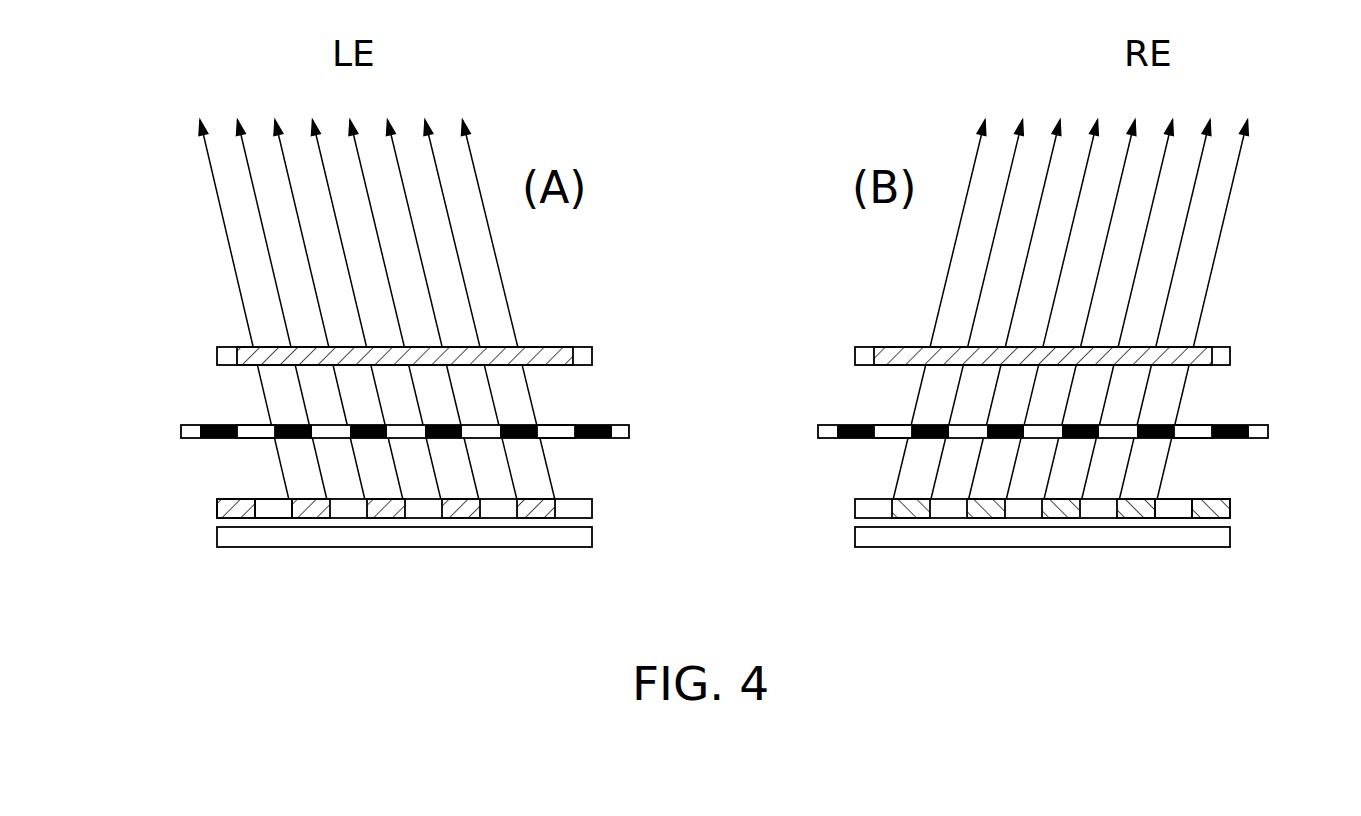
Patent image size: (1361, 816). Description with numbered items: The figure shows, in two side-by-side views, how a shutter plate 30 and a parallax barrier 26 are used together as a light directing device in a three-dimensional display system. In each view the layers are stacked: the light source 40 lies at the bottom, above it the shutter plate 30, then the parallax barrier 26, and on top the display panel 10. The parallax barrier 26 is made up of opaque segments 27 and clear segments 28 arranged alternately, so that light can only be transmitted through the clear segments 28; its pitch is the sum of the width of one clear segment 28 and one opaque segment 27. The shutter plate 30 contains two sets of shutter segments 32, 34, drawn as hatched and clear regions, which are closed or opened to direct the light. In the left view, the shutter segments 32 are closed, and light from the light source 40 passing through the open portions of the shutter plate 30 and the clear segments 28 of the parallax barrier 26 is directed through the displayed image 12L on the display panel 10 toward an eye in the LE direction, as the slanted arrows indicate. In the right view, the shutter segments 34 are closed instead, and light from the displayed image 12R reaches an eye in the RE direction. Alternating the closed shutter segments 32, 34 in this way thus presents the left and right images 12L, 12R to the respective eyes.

The display panel 10 is at (723, 333).
The displayed image 12L is at (545, 347).
The displayed image 12R is at (917, 347).
The parallax barrier 26 is at (729, 432).
The opaque segments 27 is at (202, 425).
The clear segments 28 is at (253, 425).
The shutter plate 30 is at (725, 487).
The shutter segments 32 is at (230, 502).
The shutter segments 34 is at (280, 502).
The light source 40 is at (593, 537).